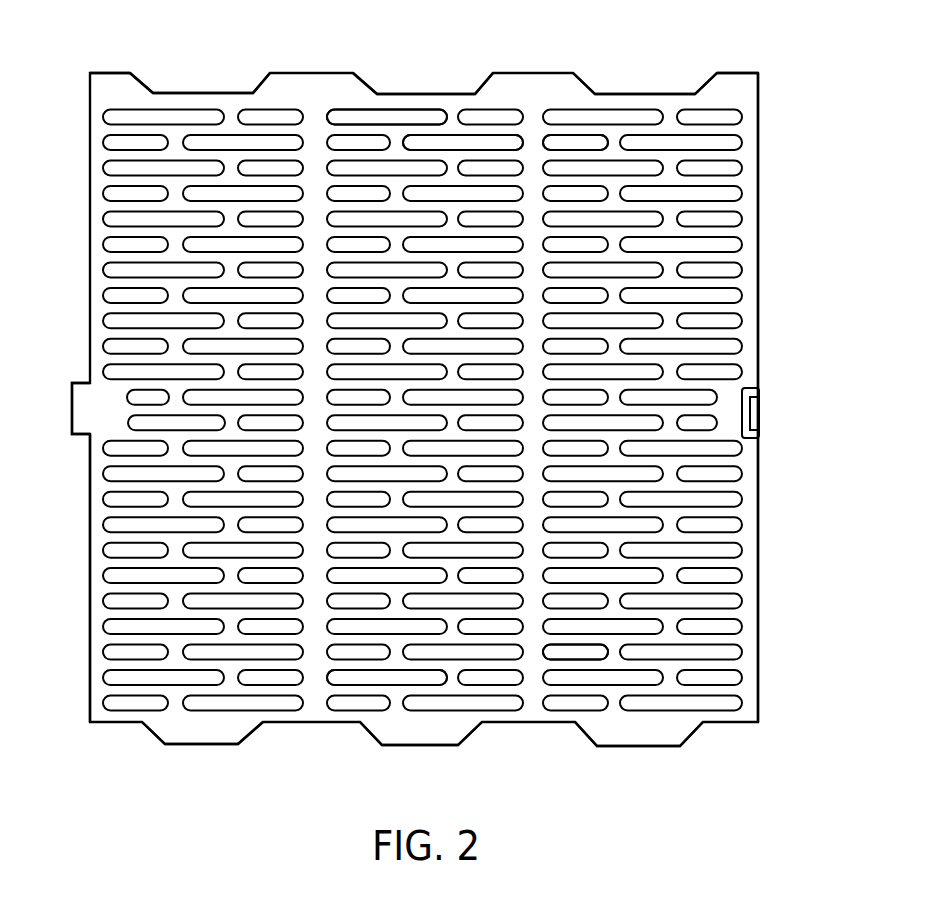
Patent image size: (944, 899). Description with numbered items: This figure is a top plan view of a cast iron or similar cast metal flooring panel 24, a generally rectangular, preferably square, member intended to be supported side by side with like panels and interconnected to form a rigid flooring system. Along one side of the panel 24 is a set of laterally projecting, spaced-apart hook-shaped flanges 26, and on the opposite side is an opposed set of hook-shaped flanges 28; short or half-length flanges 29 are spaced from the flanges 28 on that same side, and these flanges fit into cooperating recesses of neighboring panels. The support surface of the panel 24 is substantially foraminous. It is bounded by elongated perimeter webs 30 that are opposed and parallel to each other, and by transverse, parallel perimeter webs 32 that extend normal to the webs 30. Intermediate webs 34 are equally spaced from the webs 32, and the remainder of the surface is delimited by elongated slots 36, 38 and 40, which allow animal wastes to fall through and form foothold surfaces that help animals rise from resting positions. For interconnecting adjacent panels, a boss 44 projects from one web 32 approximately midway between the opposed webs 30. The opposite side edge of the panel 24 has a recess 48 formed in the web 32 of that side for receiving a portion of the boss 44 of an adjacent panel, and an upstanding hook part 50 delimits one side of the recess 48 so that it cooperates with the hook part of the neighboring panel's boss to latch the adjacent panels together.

The cast metal flooring panel 24 is at (738, 726).
The hook-shaped flanges 26 is at (228, 745).
The hook shaped flanges 28 is at (328, 73).
The half length flanges 29 is at (115, 73).
The elongated perimeter webs 30 is at (195, 93).
The transverse perimeter webs 32 is at (758, 515).
The intermediate webs 34 is at (336, 680).
The elongated slot 36 is at (395, 118).
The elongated slot 38 is at (462, 140).
The elongated slot 40 is at (588, 143).
The boss 44 is at (71, 437).
The recess 48 is at (753, 408).
The upstanding hook part 50 is at (759, 418).